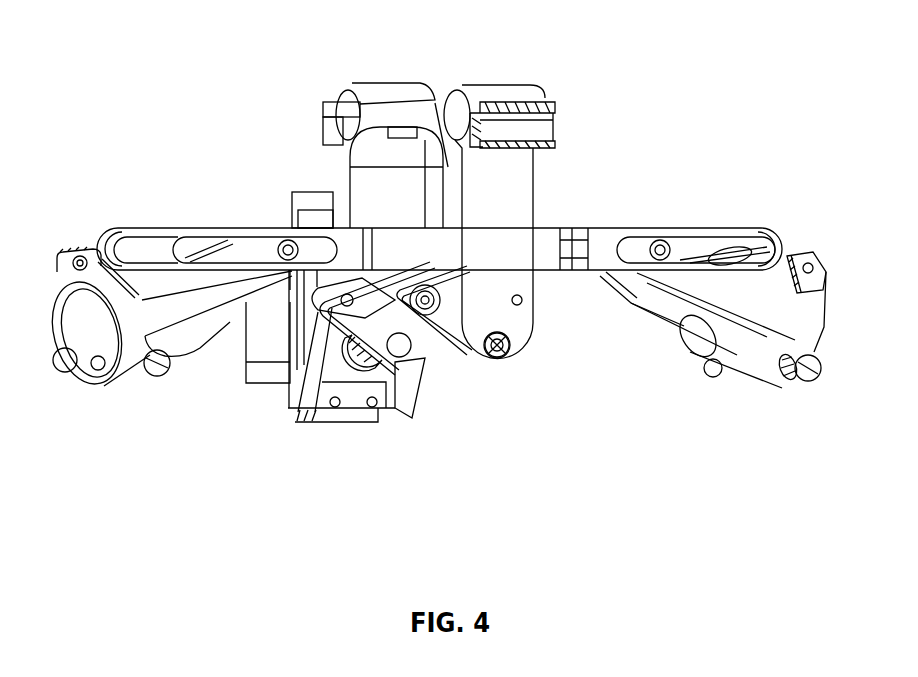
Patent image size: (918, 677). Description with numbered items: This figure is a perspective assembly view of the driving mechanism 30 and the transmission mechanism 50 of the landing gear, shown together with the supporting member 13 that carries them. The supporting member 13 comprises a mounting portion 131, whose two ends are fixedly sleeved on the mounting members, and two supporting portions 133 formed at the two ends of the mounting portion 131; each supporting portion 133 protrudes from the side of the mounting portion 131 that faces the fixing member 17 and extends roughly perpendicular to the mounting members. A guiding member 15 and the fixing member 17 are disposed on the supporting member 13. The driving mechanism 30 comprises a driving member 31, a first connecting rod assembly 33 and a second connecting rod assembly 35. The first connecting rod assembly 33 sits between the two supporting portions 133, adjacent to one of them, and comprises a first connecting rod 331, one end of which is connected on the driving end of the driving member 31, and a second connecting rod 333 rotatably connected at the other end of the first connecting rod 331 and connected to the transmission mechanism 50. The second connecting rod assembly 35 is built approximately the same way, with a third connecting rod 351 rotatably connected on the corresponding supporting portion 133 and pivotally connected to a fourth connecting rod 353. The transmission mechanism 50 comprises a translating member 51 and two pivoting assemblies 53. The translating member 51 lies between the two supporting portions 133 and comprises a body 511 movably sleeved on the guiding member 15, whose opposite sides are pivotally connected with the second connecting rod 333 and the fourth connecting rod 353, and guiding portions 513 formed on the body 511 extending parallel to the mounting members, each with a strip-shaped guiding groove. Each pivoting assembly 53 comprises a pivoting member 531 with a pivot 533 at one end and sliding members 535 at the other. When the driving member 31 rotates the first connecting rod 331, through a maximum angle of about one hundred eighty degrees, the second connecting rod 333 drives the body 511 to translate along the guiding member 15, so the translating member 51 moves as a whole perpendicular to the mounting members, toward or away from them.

The supporting member 13 is at (424, 186).
The mounting portion 131 is at (492, 83).
The supporting portion 133 is at (507, 167).
The guiding member 15 is at (343, 162).
The fixing member 17 is at (243, 362).
The driving mechanism 30 is at (398, 379).
The driving member 31 is at (277, 380).
The first connecting rod assembly 33 is at (370, 402).
The first connecting rod 331 is at (367, 330).
The second connecting rod 333 is at (432, 325).
The second connecting rod assembly 35 is at (446, 398).
The third connecting rod 351 is at (440, 340).
The fourth connecting rod 353 is at (528, 416).
The transmission mechanism 50 is at (477, 215).
The translating member 51 is at (477, 215).
The body 511 is at (553, 228).
The guiding portion 513 is at (607, 245).
The pivoting assembly 53 is at (693, 369).
The pivoting member 531 is at (737, 352).
The pivot 533 is at (793, 412).
The sliding member 535 is at (633, 273).